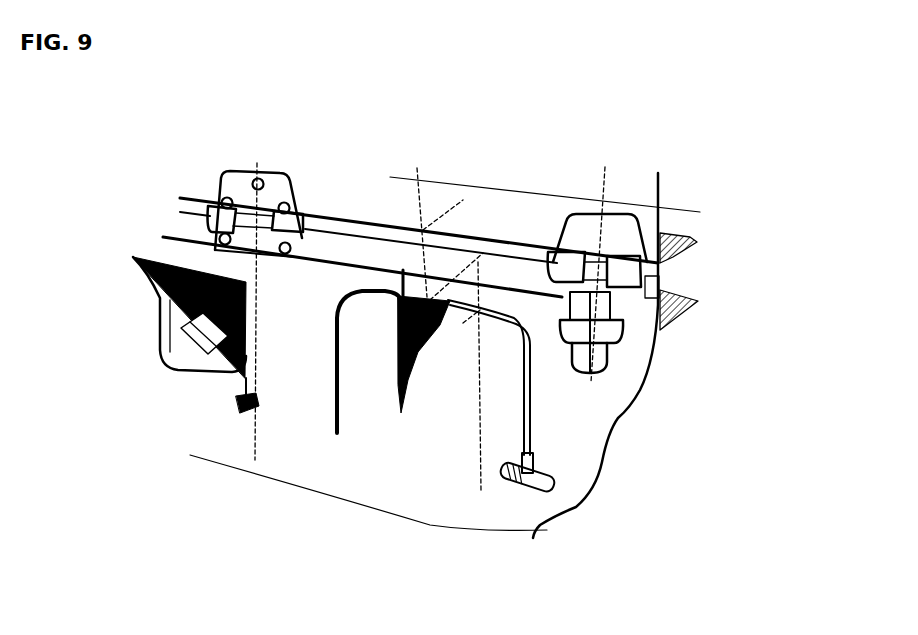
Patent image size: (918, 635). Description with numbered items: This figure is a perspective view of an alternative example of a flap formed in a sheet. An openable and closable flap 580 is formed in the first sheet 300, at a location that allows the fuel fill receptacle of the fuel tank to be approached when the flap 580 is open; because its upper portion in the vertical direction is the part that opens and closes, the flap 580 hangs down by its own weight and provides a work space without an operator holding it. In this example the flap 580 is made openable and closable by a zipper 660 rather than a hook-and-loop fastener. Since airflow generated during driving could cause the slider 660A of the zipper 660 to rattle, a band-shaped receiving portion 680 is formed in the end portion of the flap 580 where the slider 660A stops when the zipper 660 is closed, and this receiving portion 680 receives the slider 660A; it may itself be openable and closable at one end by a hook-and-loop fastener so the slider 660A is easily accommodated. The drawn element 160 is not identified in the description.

The frame member 160 is at (670, 293).
The first sheet 300 is at (613, 407).
The flap 580 is at (167, 343).
The zipper 660 is at (153, 243).
The slider 660A is at (530, 478).
The receiving portion 680 is at (243, 400).